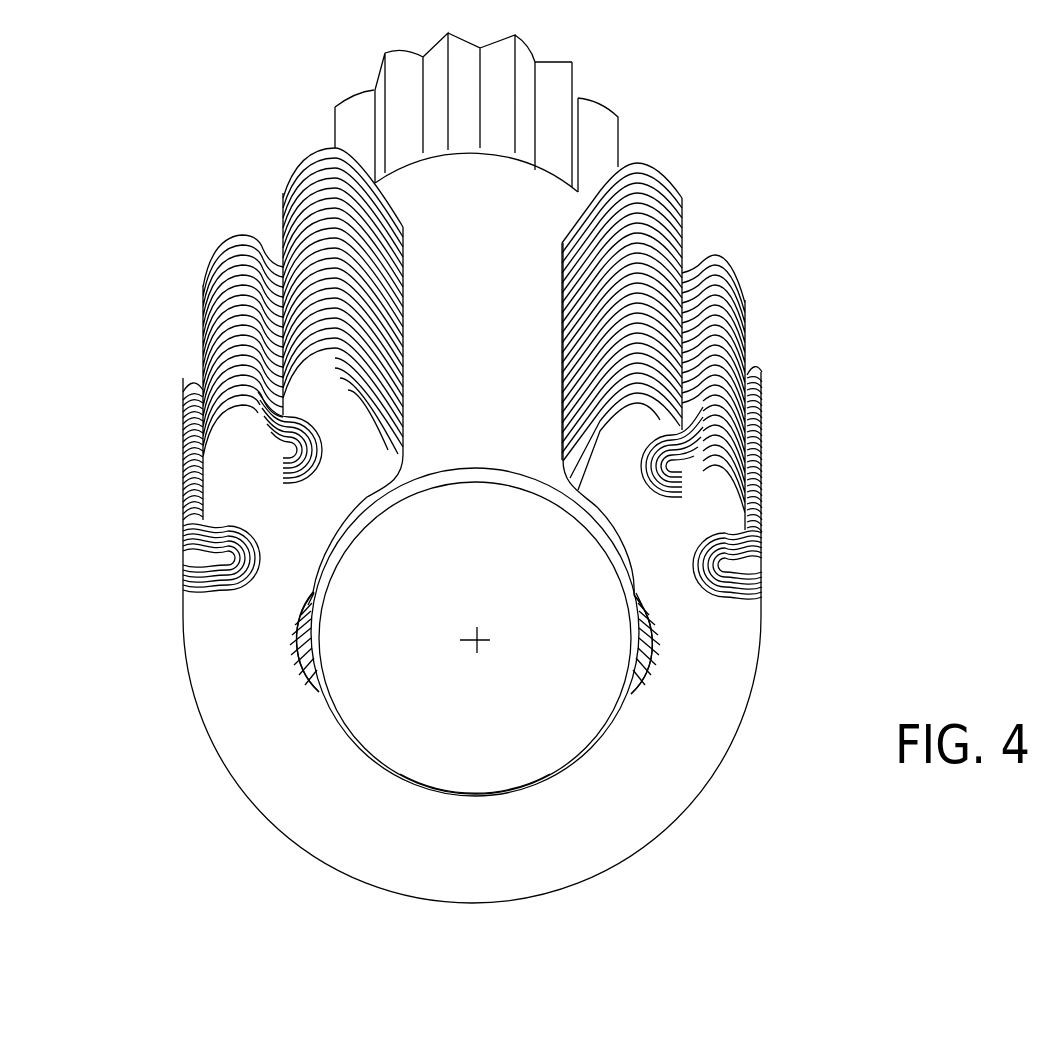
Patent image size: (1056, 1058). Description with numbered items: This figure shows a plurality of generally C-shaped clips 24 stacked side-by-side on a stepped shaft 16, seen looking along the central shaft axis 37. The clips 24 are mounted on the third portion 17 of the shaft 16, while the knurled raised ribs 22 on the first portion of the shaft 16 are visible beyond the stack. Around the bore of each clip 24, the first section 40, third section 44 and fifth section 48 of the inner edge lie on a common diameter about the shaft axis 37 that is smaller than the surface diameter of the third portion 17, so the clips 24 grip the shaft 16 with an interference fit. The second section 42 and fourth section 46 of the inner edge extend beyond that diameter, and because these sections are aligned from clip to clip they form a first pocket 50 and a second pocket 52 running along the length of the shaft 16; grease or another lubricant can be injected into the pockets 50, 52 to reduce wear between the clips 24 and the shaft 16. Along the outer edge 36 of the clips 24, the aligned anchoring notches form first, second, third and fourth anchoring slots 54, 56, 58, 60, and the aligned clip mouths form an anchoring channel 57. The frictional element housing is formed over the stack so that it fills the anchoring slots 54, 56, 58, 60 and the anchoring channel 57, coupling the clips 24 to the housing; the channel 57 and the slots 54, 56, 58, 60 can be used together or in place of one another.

The shaft 16 is at (447, 190).
The raised ribs 22 is at (574, 62).
The clips 24 is at (278, 195).
The outer edge 36 is at (672, 208).
The second anchoring slot 56 is at (272, 426).
The first anchoring slot 54 is at (206, 547).
The third anchoring slot 58 is at (672, 453).
The fourth anchoring slot 60 is at (730, 551).
The third portion 17 is at (514, 468).
The anchoring channel 57 is at (433, 424).
The first section 40 is at (361, 516).
The fifth section 48 is at (600, 508).
The third section 44 is at (440, 786).
The central shaft axis 37 is at (478, 645).
The second section 42 is at (308, 682).
The first pocket 50 is at (296, 633).
The second pocket 52 is at (640, 645).
The fourth section 46 is at (648, 692).